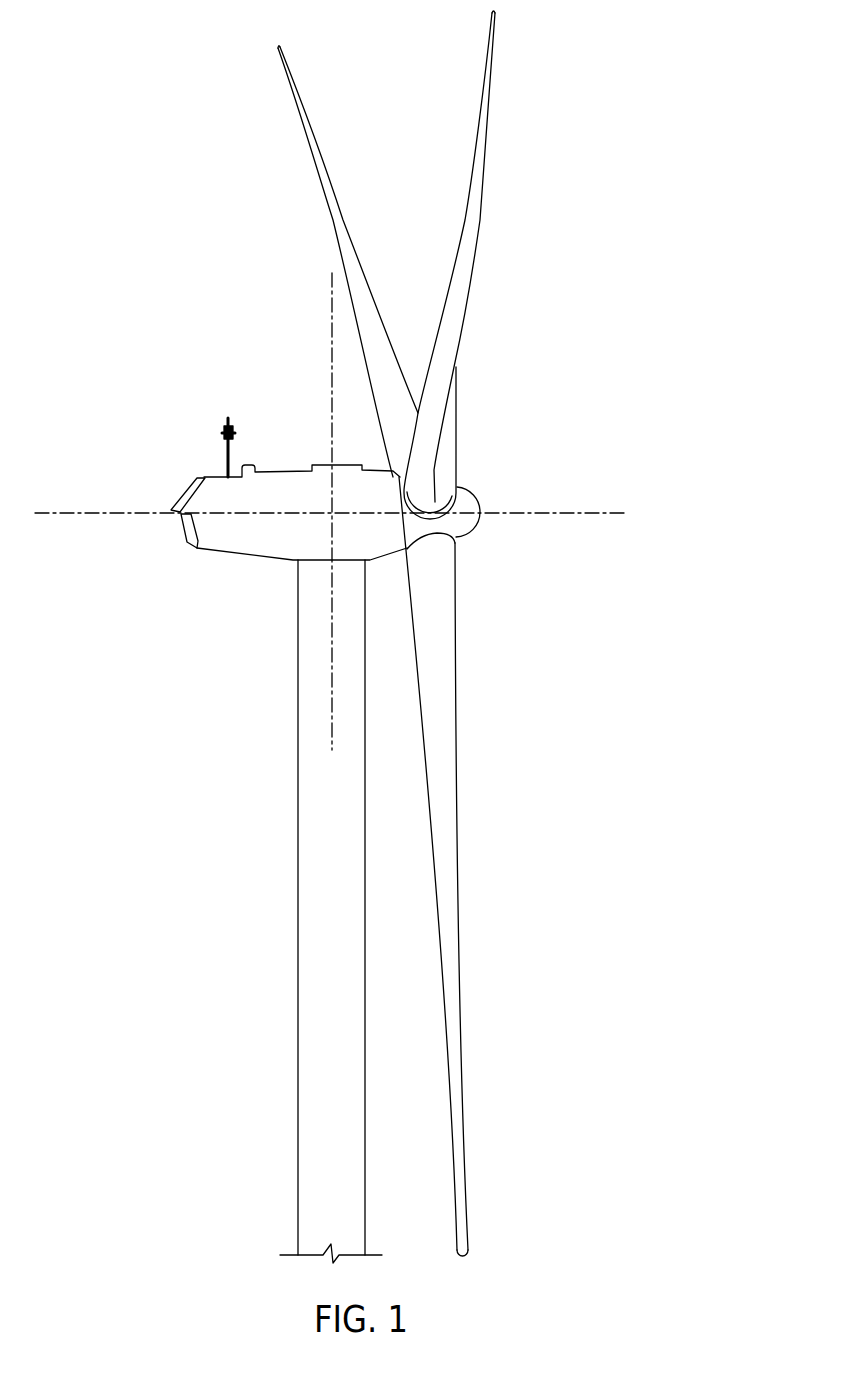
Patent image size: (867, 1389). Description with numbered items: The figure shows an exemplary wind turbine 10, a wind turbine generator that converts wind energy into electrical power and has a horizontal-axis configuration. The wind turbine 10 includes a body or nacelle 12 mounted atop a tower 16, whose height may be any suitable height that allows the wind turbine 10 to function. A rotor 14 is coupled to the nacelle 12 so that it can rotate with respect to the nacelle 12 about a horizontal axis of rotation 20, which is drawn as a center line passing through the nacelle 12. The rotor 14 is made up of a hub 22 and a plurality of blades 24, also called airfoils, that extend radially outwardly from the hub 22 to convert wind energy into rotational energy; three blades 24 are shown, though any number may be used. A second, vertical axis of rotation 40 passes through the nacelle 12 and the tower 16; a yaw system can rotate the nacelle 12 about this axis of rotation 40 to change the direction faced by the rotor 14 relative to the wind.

The wind turbine 10 is at (96, 70).
The nacelle 12 is at (216, 553).
The rotor 14 is at (474, 566).
The tower 16 is at (297, 884).
The axis of rotation 20 is at (608, 514).
The hub 22 is at (482, 518).
The blades 24 is at (300, 88).
The axis of rotation 40 is at (330, 327).